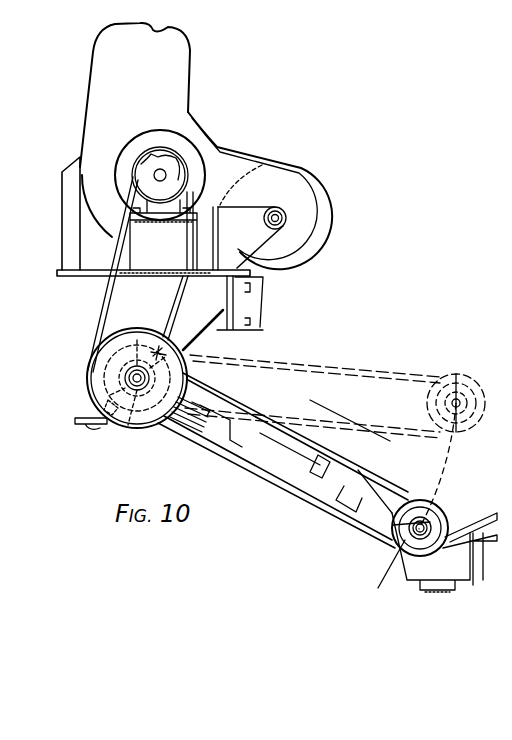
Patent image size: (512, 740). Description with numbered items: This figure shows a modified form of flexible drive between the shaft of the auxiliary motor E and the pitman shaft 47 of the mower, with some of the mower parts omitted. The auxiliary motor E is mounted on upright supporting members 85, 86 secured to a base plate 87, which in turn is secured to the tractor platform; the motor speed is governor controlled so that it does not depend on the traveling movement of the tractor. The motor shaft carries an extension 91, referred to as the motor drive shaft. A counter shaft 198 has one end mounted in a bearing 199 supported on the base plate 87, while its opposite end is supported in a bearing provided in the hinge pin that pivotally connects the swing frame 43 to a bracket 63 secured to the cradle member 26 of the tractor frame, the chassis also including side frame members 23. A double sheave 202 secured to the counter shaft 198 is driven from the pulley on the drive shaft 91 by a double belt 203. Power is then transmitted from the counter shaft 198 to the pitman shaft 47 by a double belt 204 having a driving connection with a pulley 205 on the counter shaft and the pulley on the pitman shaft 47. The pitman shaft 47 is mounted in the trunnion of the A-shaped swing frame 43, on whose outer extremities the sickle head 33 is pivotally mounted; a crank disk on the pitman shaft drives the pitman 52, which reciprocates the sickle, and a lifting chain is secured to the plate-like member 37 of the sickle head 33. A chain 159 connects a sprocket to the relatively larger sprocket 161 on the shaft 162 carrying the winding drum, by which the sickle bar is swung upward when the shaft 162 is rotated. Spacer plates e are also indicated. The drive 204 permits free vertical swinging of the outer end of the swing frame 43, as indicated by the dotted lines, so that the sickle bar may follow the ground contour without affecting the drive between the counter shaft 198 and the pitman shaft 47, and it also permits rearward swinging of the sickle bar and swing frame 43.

The auxiliary motor E is at (107, 80).
The motor drive shaft extension 91 is at (155, 175).
The chain 159 is at (250, 153).
The sprocket 161 is at (303, 198).
The shaft 162 is at (287, 218).
The upright supporting member 86 is at (219, 242).
The upright supporting member 85 is at (66, 206).
The base plate 87 is at (97, 274).
The side frame member 23 is at (225, 328).
The double belt 203 is at (100, 329).
The bearing 199 is at (137, 365).
The pulley 205 is at (105, 378).
The bracket 63 is at (106, 404).
The double sheave 202 is at (92, 417).
The counter shaft 198 is at (129, 420).
The cradle member 26 is at (88, 428).
The spacer plates e is at (200, 410).
The swing frame 43 is at (302, 480).
The pitman shaft 47 is at (426, 523).
The sickle head 33 is at (413, 590).
The plate-like member 37 is at (484, 513).
The pitman 52 is at (484, 542).
The double belt 204 is at (388, 375).